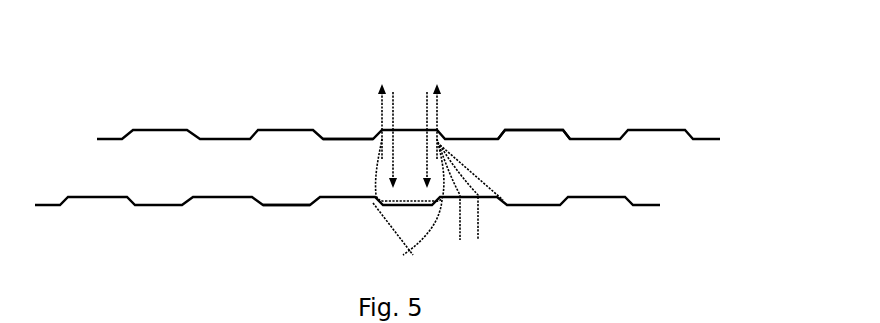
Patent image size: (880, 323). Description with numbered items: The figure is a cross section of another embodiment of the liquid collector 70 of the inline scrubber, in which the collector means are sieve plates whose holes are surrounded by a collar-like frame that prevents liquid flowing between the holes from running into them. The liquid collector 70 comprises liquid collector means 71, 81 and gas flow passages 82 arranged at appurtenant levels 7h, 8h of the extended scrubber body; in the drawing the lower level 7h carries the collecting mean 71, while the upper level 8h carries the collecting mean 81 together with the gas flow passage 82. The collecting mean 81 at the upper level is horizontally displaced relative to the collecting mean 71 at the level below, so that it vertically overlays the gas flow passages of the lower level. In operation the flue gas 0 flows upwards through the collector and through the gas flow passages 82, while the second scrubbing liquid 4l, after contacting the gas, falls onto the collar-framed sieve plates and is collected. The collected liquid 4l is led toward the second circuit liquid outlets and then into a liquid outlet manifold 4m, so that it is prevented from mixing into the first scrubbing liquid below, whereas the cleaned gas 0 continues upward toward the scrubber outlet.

The level 8h is at (382, 132).
The level 7h is at (376, 208).
The liquid collector mean 81 is at (369, 123).
The gas flow passage 82 is at (553, 112).
The liquid collector mean 71 is at (298, 198).
The second scrubbing liquid 4l is at (423, 120).
The flue gas 0 is at (470, 232).
The liquid collector 70 is at (722, 67).
The liquid outlet manifold 4m is at (641, 312).